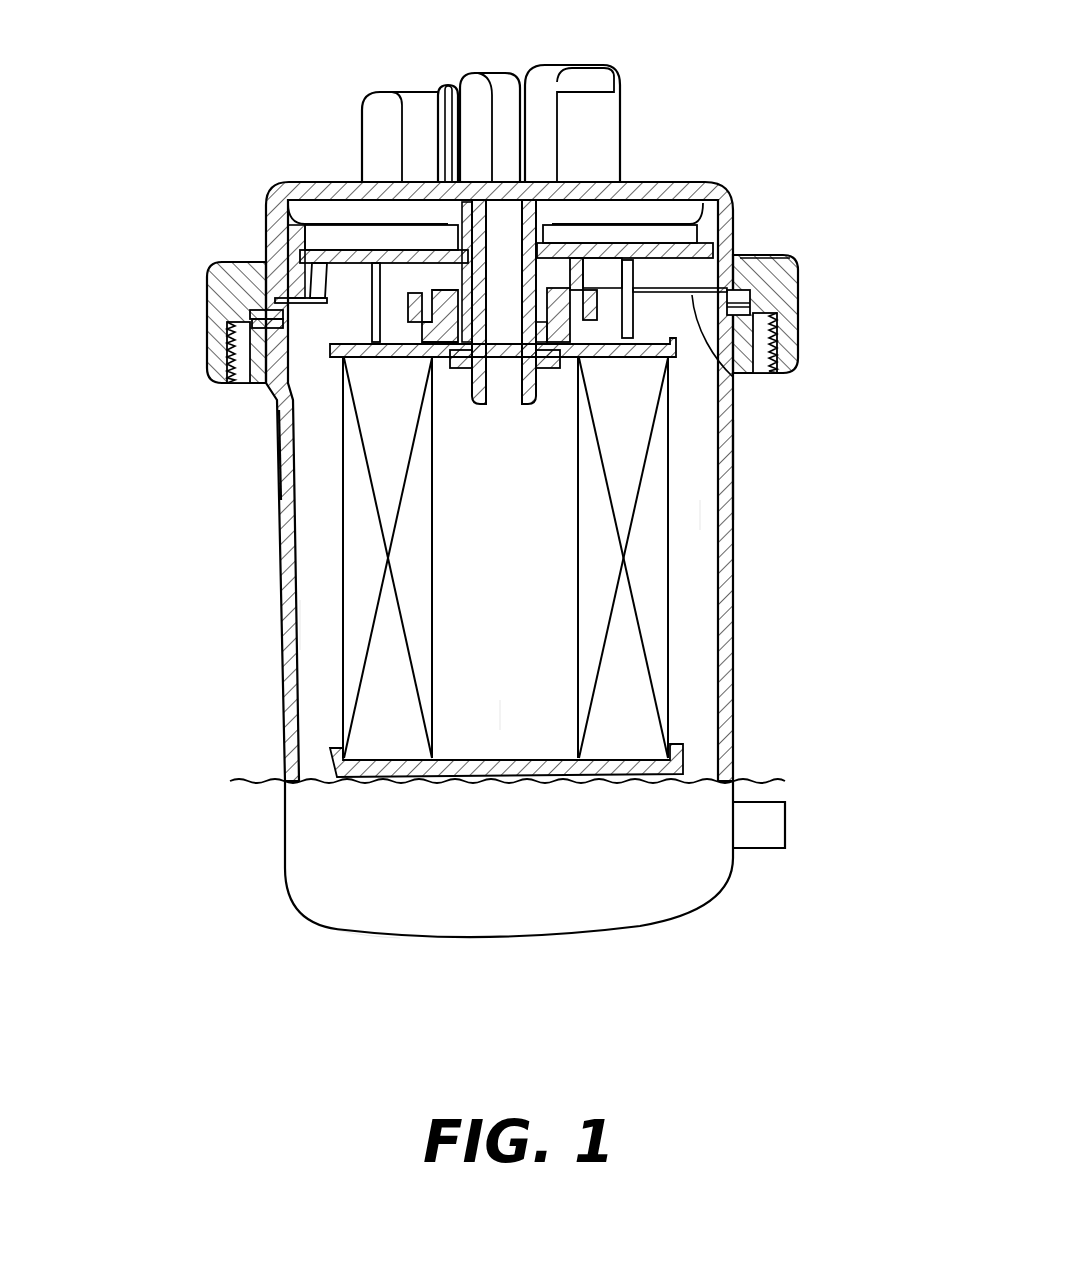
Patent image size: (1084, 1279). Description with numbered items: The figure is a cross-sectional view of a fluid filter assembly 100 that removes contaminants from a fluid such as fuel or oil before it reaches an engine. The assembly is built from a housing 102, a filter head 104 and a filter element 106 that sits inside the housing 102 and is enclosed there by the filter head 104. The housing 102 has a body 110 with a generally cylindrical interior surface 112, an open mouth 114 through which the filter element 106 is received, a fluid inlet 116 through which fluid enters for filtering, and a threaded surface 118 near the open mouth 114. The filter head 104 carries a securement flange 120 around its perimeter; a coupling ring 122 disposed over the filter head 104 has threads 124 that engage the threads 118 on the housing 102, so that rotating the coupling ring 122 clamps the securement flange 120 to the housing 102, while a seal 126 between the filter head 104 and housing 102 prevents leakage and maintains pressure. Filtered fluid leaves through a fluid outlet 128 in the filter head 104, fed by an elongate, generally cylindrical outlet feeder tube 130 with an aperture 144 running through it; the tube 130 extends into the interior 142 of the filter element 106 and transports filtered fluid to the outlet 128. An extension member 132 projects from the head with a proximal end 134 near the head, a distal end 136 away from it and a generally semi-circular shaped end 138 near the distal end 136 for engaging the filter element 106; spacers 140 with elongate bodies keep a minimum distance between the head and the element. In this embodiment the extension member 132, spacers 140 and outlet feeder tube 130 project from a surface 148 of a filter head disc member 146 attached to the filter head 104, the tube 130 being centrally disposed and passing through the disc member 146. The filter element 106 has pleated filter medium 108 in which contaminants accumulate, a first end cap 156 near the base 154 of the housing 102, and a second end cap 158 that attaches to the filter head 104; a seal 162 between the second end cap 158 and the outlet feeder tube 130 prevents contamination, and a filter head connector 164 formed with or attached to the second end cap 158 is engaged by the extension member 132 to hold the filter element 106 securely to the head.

The fluid filter assembly 100 is at (157, 975).
The housing 102 is at (733, 667).
The filter head 104 is at (700, 181).
The filter element 106 is at (682, 624).
The filter medium 108 is at (655, 562).
The body 110 is at (697, 515).
The interior surface 112 is at (733, 475).
The open mouth 114 is at (733, 377).
The fluid inlet 116 is at (777, 843).
The threaded surface 118 is at (777, 342).
The securement flange 120 is at (750, 258).
The coupling ring 122 is at (777, 285).
The threads 124 is at (782, 323).
The seal 126 is at (772, 258).
The fluid outlet 128 is at (620, 98).
The outlet feeder tube 130 is at (527, 262).
The extension member 132 is at (378, 335).
The proximal end 134 is at (462, 308).
The distal end 136 is at (289, 306).
The shaped end 138 is at (368, 290).
The spacer 140 is at (730, 302).
The interior 142 is at (545, 716).
The aperture 144 is at (498, 237).
The filter head disc member 146 is at (335, 248).
The surface 148 is at (633, 275).
The base 154 is at (333, 917).
The first end cap 156 is at (357, 780).
The second end cap 158 is at (277, 418).
The seal 162 is at (287, 328).
The filter head connector 164 is at (470, 215).